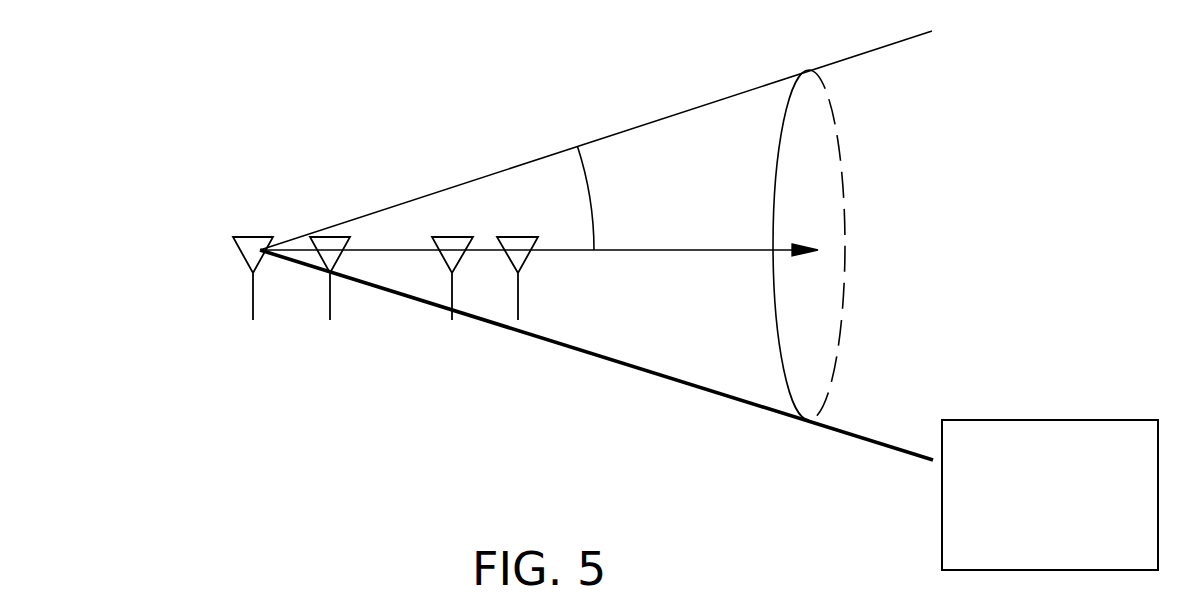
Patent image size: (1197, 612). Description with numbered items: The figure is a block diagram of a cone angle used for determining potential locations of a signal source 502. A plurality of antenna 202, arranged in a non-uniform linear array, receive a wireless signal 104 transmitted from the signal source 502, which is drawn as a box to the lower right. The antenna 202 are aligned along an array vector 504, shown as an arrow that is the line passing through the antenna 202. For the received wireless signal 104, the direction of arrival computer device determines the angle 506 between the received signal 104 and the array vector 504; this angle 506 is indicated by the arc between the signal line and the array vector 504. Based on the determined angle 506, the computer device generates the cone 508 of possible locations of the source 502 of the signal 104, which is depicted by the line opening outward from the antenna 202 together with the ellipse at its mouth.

The antenna array elements 202 is at (237, 247).
The beam boresight axis 504 is at (734, 248).
The beam half-angle 506 is at (590, 197).
The beam edge 508 is at (644, 124).
The line of sight to signal source 104 is at (740, 400).
The signal source 502 is at (1148, 457).